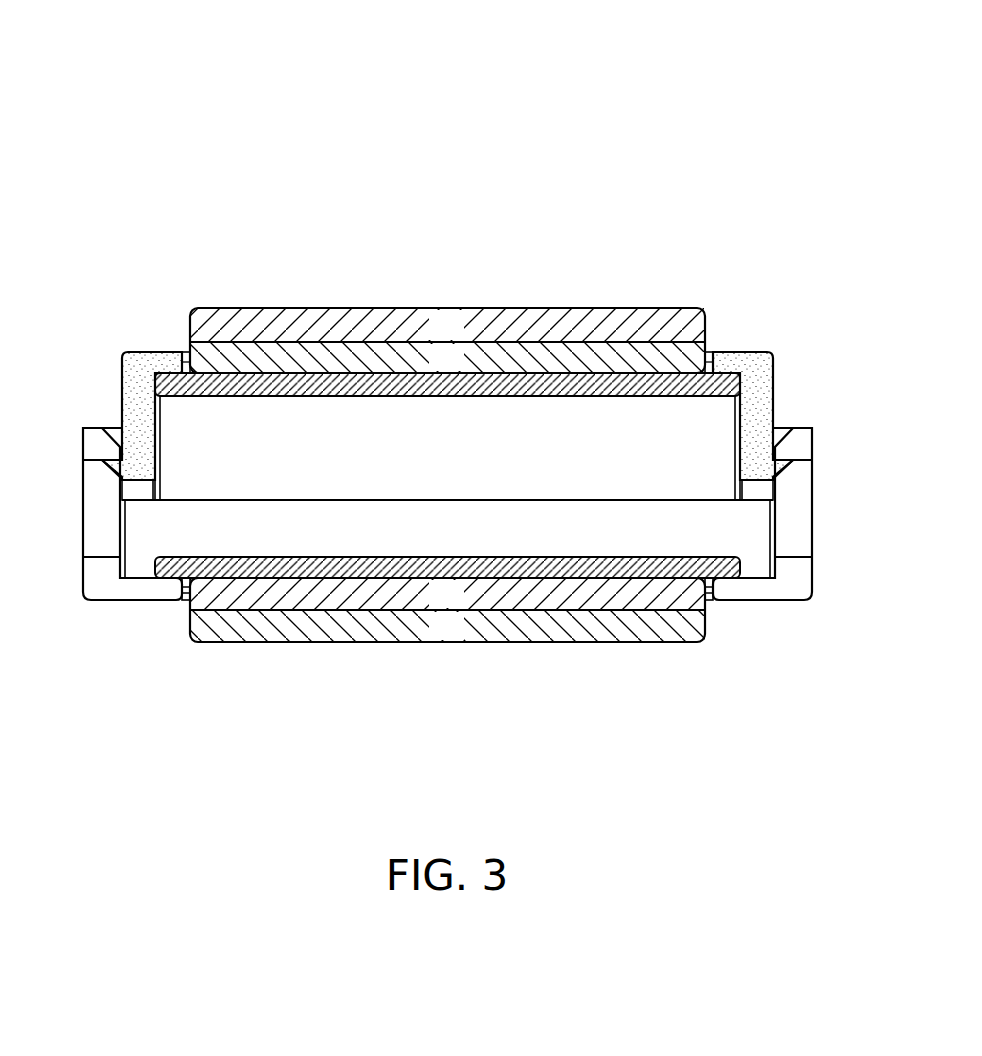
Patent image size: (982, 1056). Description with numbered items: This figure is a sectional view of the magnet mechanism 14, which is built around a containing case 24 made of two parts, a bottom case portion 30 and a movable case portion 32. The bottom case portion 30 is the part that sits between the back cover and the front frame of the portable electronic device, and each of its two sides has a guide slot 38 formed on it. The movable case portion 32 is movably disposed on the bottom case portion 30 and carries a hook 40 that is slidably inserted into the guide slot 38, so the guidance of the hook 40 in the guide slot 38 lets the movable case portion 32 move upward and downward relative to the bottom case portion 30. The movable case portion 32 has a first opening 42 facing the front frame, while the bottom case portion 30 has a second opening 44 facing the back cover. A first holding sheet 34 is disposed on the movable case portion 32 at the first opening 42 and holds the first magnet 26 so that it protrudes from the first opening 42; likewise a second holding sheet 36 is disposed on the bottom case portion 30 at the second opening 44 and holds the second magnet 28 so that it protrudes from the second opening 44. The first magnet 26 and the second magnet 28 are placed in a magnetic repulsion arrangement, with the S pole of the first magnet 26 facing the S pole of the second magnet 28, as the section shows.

The magnet mechanism 14 is at (752, 100).
The containing case 24 is at (705, 258).
The first magnet 26 is at (475, 308).
The second magnet 28 is at (477, 643).
The bottom case portion 30 is at (803, 428).
The movable case portion 32 is at (740, 352).
The first holding sheet 34 is at (157, 380).
The second holding sheet 36 is at (168, 567).
The guide slot 38 is at (800, 543).
The hook 40 is at (778, 472).
The first opening 42 is at (180, 349).
The second opening 44 is at (183, 603).